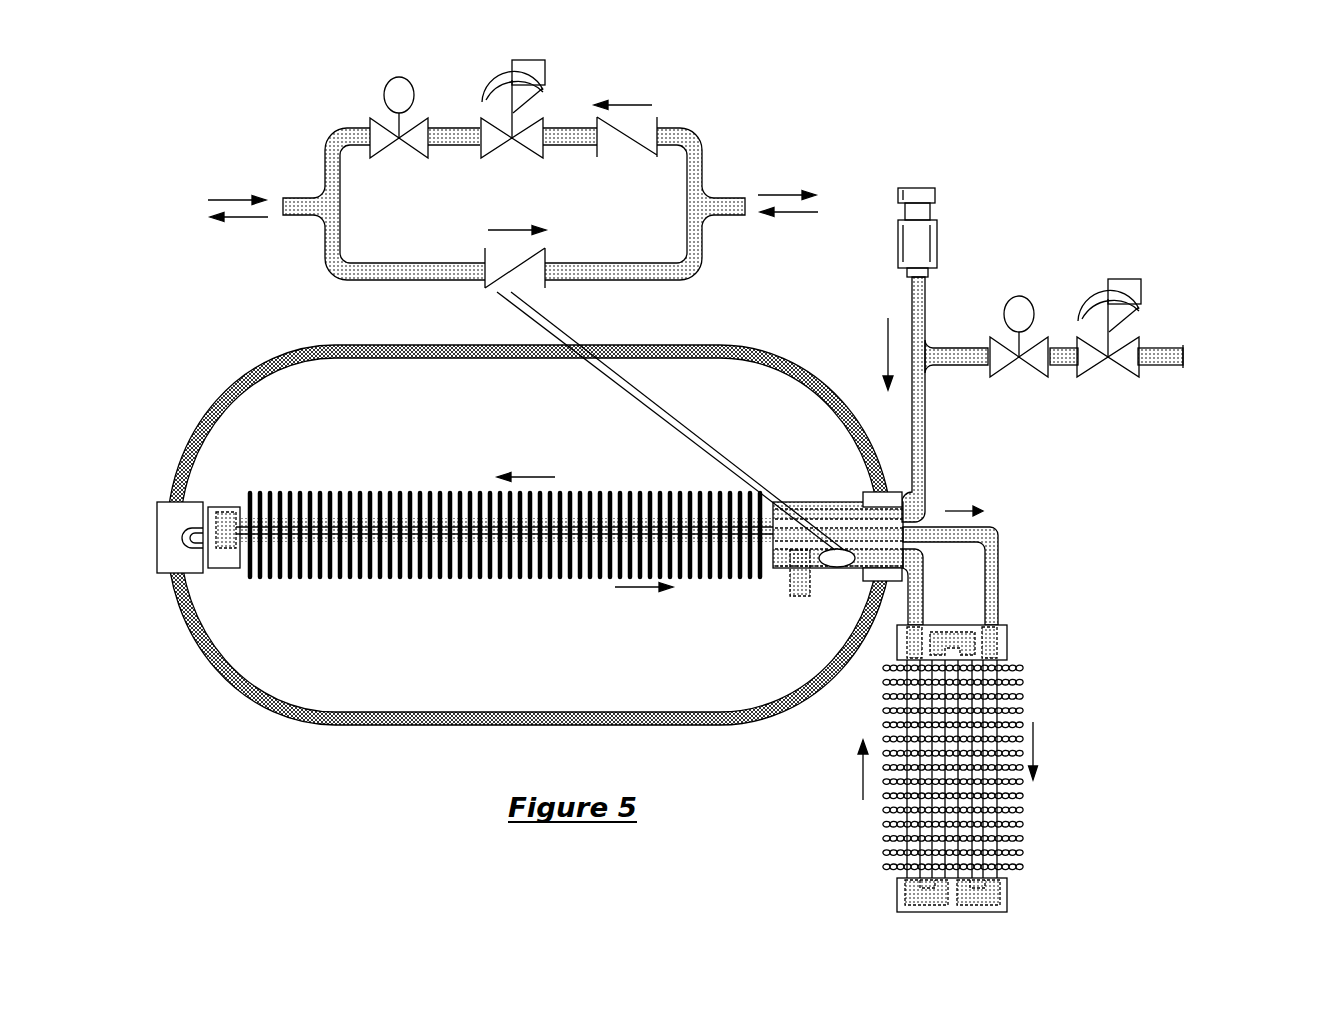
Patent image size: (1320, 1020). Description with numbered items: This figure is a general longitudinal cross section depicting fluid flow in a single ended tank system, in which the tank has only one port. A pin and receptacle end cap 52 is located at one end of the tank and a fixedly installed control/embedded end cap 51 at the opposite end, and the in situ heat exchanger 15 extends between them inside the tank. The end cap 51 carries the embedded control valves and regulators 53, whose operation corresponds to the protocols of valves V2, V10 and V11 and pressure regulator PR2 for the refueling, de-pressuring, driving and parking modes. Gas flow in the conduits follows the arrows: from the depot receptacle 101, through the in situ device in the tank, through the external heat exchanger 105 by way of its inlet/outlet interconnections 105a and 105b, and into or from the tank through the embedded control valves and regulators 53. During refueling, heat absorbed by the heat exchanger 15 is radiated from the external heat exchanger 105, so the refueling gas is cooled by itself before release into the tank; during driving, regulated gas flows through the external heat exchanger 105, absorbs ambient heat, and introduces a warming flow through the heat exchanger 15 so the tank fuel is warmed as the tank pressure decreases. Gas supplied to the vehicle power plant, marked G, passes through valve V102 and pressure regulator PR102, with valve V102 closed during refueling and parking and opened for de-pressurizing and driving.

The valve V2 is at (397, 77).
The pressure regulator PR2 is at (546, 65).
The valve V10 is at (657, 120).
The valve V11 is at (543, 260).
The embedded control valves and regulators 53 is at (302, 283).
The pin and receptacle end cap 52 is at (165, 507).
The heat exchanger 15 is at (730, 577).
The control/embedded end cap 51 is at (877, 500).
The depot receptacle 101 is at (937, 243).
The valve V102 is at (988, 377).
The pressure regulator PR102 is at (1078, 377).
The gas to vehicle G is at (1185, 357).
The external heat exchanger 105 is at (987, 886).
The inlet/outlet interconnection 105a is at (995, 572).
The inlet/outlet interconnection 105b is at (917, 617).